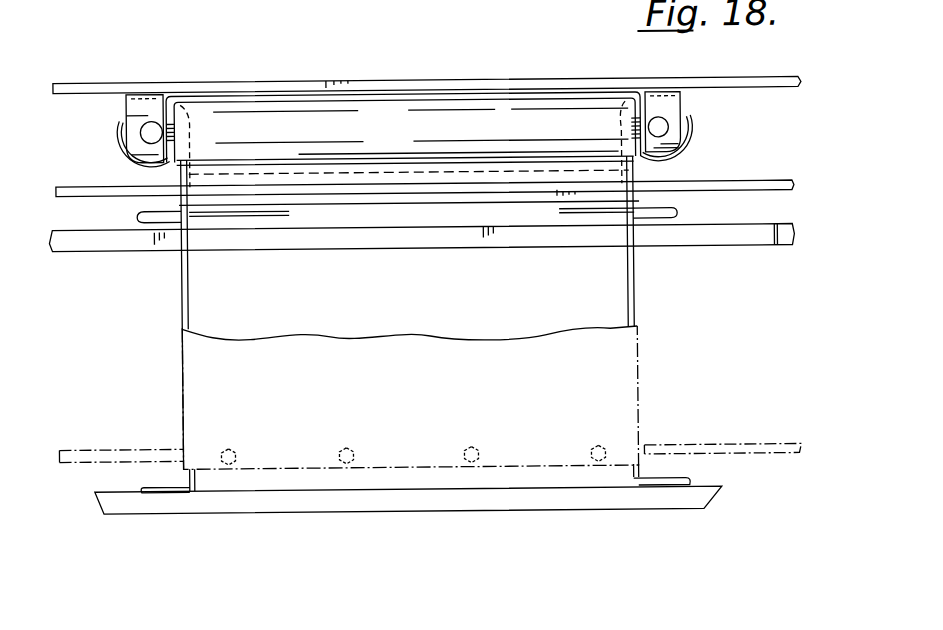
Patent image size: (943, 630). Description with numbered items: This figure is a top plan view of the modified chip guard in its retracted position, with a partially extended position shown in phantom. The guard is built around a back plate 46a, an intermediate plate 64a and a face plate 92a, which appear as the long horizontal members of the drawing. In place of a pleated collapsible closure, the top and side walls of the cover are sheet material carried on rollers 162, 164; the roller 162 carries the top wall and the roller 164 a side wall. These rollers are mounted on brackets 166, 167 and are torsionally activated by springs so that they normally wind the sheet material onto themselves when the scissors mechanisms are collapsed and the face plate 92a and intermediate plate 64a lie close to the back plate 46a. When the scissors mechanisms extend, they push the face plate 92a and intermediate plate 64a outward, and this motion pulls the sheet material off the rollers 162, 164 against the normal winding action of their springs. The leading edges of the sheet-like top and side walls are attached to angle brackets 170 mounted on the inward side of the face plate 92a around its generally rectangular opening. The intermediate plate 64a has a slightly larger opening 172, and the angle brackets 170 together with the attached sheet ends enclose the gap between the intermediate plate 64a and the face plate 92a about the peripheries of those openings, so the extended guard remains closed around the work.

The back plate 46a is at (188, 50).
The roller 162 is at (357, 110).
The bracket 166 is at (637, 93).
The bracket 167 is at (135, 103).
The roller 164 is at (120, 132).
The intermediate plate 64a is at (748, 187).
The opening 172 is at (180, 172).
The angle bracket 170 is at (183, 207).
The face plate 92a is at (390, 243).